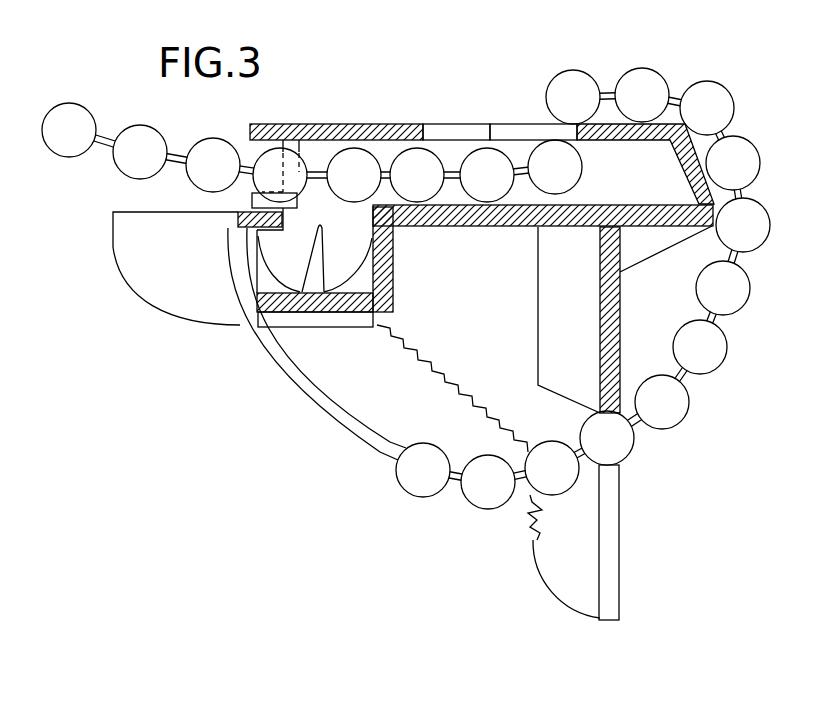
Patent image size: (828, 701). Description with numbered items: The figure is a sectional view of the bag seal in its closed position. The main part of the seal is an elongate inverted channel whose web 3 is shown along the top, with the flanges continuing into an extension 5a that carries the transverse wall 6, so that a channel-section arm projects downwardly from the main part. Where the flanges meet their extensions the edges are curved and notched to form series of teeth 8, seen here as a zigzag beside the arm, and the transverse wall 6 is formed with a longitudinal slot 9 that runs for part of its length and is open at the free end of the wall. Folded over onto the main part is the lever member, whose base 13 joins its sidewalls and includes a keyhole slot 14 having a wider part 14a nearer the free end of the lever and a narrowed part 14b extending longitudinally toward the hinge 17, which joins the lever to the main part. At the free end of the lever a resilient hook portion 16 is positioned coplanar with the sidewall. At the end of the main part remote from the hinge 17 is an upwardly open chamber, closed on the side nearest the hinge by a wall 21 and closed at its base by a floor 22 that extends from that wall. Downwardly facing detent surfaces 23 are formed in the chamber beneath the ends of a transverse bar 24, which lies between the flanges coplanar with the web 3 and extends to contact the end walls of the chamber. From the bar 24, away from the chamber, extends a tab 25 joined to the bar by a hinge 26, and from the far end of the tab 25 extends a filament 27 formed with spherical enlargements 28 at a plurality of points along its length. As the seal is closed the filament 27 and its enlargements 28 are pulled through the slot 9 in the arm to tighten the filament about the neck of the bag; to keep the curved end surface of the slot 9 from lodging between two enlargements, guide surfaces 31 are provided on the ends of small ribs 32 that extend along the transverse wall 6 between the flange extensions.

The web 3 is at (533, 221).
The extension 5a is at (567, 572).
The transverse wall 6 is at (613, 310).
The teeth 8 is at (470, 383).
The longitudinal slot 9 is at (610, 517).
The base 13 is at (352, 122).
The keyhole slot 14 is at (500, 78).
The wider part 14a is at (443, 125).
The narrowed part 14b is at (533, 105).
The resilient hook portion 16 is at (285, 268).
The hinge 17 is at (707, 203).
The wall 21 is at (392, 260).
The floor 22 is at (337, 302).
The detent surfaces 23 is at (279, 239).
The transverse bar 24 is at (257, 216).
The hinge 26 is at (230, 223).
The tab 25 is at (328, 408).
The filament 27 is at (172, 158).
The spherical enlargements 28 is at (717, 103).
The guide surfaces 31 is at (564, 404).
The ribs 32 is at (550, 307).